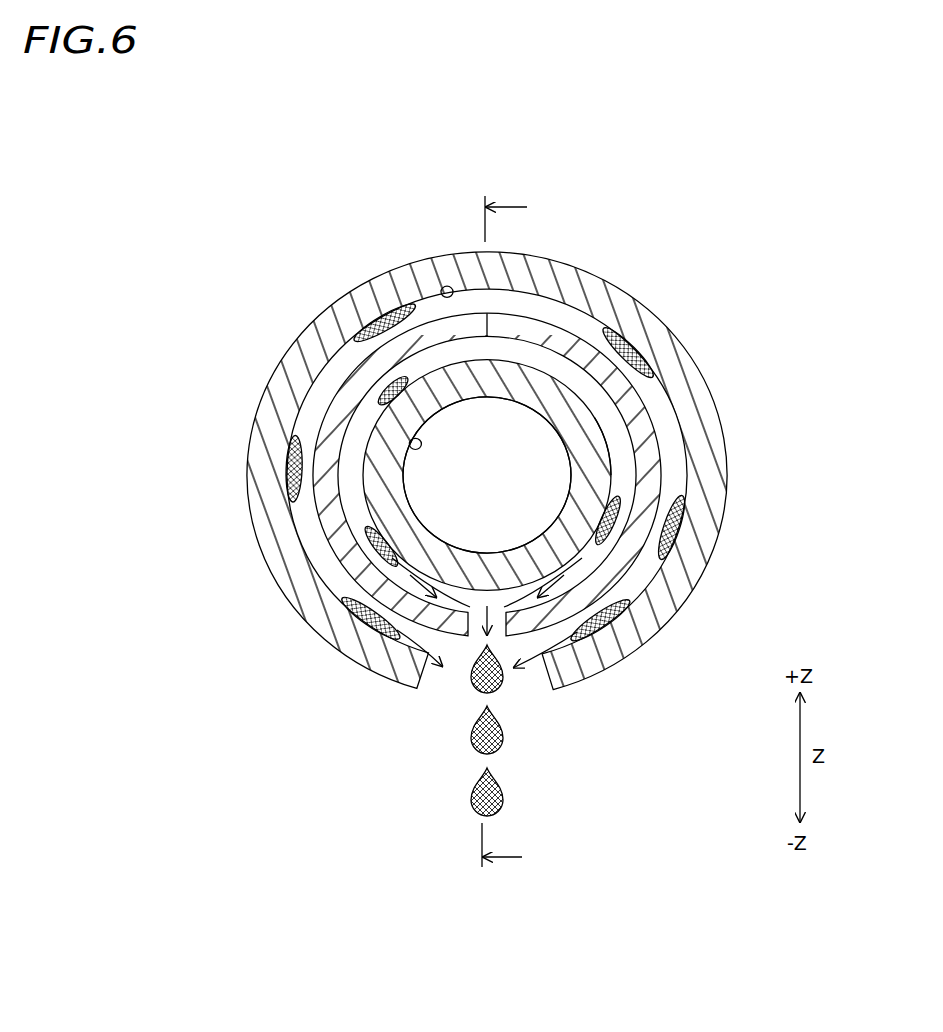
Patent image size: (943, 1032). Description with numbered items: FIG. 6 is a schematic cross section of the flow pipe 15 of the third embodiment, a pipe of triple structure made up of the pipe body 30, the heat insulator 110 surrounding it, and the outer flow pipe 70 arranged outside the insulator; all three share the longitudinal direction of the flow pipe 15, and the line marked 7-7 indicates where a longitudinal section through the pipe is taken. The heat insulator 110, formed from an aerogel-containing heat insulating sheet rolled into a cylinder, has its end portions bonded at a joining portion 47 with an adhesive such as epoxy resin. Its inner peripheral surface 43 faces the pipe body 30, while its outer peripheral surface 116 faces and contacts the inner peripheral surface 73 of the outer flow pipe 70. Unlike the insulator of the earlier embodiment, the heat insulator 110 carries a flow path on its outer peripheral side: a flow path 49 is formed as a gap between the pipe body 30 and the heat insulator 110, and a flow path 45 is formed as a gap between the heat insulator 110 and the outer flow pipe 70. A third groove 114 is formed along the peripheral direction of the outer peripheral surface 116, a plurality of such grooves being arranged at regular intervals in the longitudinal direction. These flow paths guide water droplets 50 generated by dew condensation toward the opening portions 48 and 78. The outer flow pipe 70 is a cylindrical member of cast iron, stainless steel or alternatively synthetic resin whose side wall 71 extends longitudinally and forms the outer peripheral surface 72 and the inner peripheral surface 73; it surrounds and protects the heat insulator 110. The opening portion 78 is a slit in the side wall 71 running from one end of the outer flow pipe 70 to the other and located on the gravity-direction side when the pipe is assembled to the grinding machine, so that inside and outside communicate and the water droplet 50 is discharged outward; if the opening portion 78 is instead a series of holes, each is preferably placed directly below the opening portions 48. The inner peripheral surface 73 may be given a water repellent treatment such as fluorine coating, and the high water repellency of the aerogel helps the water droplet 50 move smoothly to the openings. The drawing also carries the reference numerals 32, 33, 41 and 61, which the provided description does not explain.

The section line 7- 7 is at (512, 532).
The flow pipe 15 is at (694, 263).
The pipe body 30 is at (584, 400).
The inner tube 32 is at (505, 358).
The protrusion 33 is at (404, 444).
The intermediate tube 41 is at (620, 560).
The inner peripheral surface 43 is at (614, 463).
The flow path 45 is at (337, 580).
The joining portion 47 is at (488, 316).
The opening portion 48 is at (474, 634).
The flow path 49 is at (292, 568).
The water droplet 50 is at (382, 388).
The through hole 61 is at (505, 486).
The outer flow pipe 70 is at (524, 468).
The side wall 71 is at (345, 312).
The outer peripheral surface 72 is at (372, 283).
The inner peripheral surface 73 is at (440, 293).
The opening portion 78 is at (523, 673).
The heat insulator 110 is at (659, 438).
The third groove 114 is at (656, 398).
The outer peripheral surface 116 is at (732, 598).